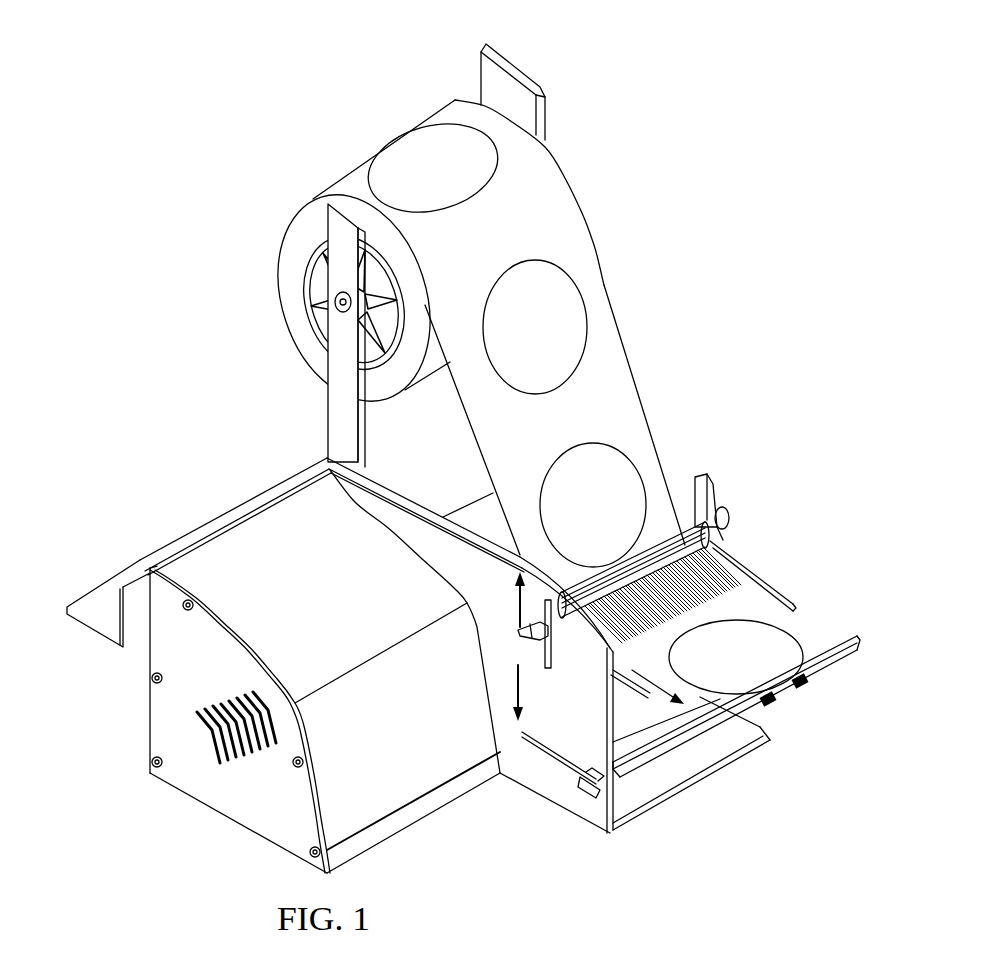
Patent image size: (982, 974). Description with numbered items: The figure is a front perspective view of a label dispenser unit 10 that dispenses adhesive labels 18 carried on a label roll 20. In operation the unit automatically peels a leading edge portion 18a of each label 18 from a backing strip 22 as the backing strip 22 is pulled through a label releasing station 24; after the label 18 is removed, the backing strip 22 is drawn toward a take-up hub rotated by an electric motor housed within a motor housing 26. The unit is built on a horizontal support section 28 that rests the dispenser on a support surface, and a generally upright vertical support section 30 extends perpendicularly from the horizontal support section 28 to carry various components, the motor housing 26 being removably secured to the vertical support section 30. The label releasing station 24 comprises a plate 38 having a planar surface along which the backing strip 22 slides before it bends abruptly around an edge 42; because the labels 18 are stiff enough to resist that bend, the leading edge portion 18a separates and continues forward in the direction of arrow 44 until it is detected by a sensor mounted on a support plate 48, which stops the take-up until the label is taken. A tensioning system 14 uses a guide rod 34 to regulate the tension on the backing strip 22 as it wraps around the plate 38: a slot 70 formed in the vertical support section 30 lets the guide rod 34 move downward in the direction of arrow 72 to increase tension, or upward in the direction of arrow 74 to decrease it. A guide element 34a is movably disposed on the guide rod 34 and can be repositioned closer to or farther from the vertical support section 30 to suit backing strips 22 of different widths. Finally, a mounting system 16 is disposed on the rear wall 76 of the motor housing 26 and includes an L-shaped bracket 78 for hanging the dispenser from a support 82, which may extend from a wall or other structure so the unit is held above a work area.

The label dispenser unit 10 is at (216, 133).
The tensioning system 14 is at (682, 482).
The mounting system 16 is at (186, 518).
The adhesive label 18 is at (427, 143).
The leading edge portion 18a is at (767, 677).
The label roll 20 is at (339, 165).
The backing strip 22 is at (627, 385).
The label releasing station 24 is at (748, 558).
The motor housing 26 is at (321, 795).
The horizontal support section 28 is at (653, 793).
The vertical support section 30 is at (552, 790).
The guide rod 34 is at (723, 505).
The guide element 34a is at (707, 477).
The plate 38 is at (773, 587).
The edge 42 is at (793, 612).
The arrow 44 is at (648, 697).
The support plate 48 is at (840, 647).
The slot 70 is at (547, 660).
The arrow 72 is at (510, 687).
The arrow 74 is at (513, 597).
The rear wall 76 is at (147, 719).
The L-shaped bracket 78 is at (157, 565).
The support 82 is at (97, 630).